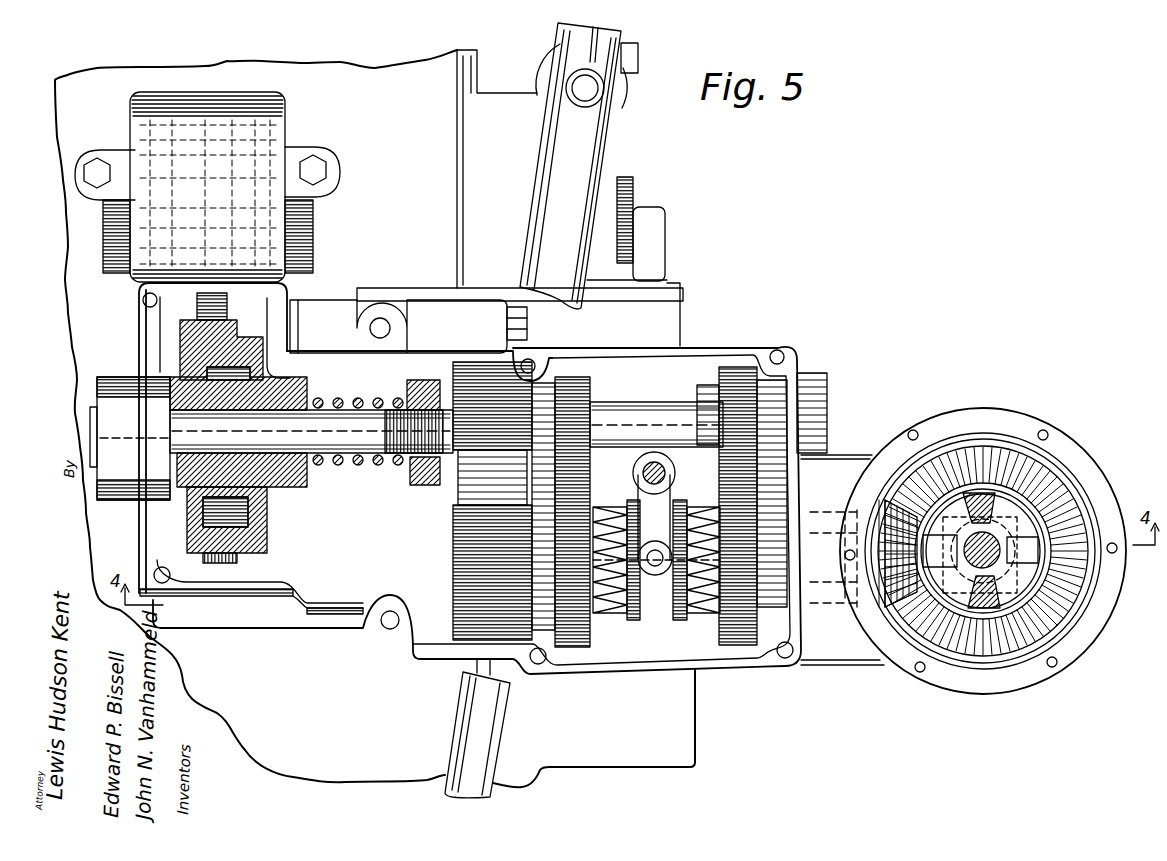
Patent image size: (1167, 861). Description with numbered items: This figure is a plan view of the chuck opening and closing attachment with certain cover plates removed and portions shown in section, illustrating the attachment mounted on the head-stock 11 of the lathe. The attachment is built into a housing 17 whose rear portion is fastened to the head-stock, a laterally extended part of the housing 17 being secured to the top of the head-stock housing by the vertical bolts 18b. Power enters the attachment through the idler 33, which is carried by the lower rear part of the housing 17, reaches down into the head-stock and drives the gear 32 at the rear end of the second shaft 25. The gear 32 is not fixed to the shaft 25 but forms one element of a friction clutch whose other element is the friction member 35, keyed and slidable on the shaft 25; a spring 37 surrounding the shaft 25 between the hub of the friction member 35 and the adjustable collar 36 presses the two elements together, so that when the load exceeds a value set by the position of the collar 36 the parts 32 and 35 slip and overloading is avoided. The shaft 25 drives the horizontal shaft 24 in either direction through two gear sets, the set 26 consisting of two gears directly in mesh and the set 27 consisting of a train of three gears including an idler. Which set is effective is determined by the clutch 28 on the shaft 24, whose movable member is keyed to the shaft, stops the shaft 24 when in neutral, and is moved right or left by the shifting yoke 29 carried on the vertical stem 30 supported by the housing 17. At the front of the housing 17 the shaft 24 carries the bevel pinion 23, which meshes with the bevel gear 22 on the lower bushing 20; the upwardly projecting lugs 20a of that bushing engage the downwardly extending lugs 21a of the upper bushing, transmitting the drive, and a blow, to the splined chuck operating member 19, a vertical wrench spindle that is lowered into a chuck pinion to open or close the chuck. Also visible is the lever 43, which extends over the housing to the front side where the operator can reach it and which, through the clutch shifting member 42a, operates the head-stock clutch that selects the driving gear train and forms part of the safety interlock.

The head-stock 11 is at (248, 722).
The housing 17 is at (338, 607).
The vertical bolts 18b is at (320, 172).
The chuck operating member 19 is at (1008, 563).
The lower bushing 20 is at (1008, 587).
The driving teeth 20a is at (995, 510).
The teeth 21a is at (1015, 483).
The bevel gear 22 is at (945, 463).
The bevel pinion 23 is at (895, 500).
The horizontal shaft 24 is at (452, 557).
The second shaft 25 is at (618, 398).
The set of gears 26 is at (740, 347).
The set of gears 27 is at (587, 352).
The clutch 28 is at (660, 603).
The shifting yoke 29 is at (662, 505).
The vertical stem 30 is at (653, 460).
The gear 32 is at (212, 567).
The idler 33 is at (197, 307).
The friction member 35 is at (259, 560).
The adjustable collar 36 is at (415, 482).
The spring 37 is at (360, 465).
The clutch shifting member 42a is at (627, 202).
The lever 43 is at (582, 172).